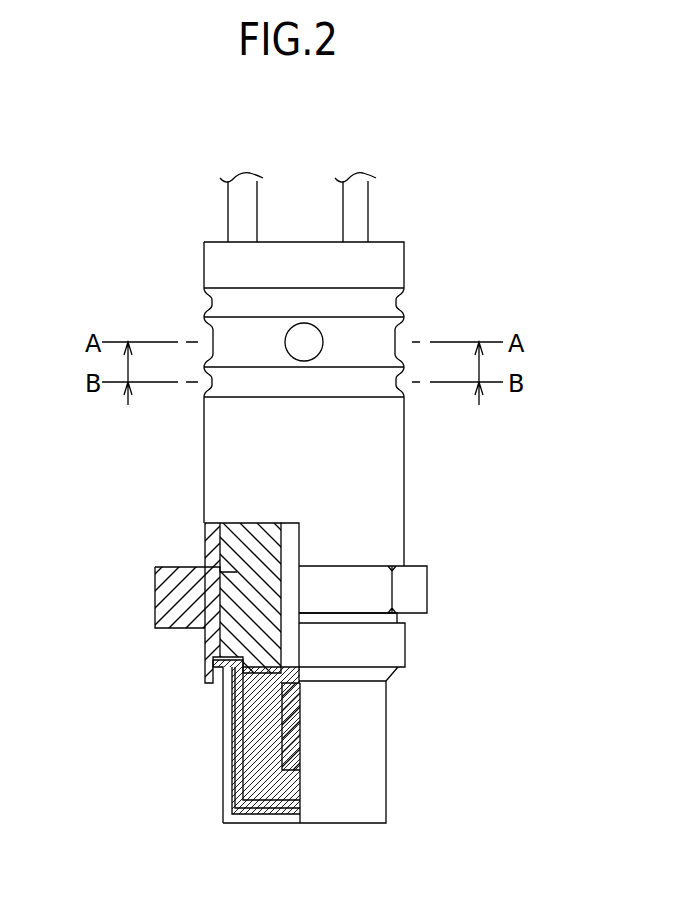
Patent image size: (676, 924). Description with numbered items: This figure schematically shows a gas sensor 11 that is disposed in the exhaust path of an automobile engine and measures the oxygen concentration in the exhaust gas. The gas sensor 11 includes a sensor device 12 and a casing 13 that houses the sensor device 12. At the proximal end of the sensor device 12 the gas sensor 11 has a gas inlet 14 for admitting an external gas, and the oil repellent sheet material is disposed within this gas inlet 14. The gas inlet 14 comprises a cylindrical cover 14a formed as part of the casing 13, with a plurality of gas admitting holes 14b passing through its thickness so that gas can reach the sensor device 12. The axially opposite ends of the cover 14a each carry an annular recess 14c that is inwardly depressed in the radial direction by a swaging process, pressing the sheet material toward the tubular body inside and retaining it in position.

The gas sensor 11 is at (447, 175).
The sensor device 12 is at (288, 712).
The casing 13 is at (438, 515).
The gas inlet 14 is at (287, 284).
The cylindrical cover 14a is at (407, 320).
The gas admitting holes 14b is at (287, 332).
The annular recess 14c is at (404, 300).